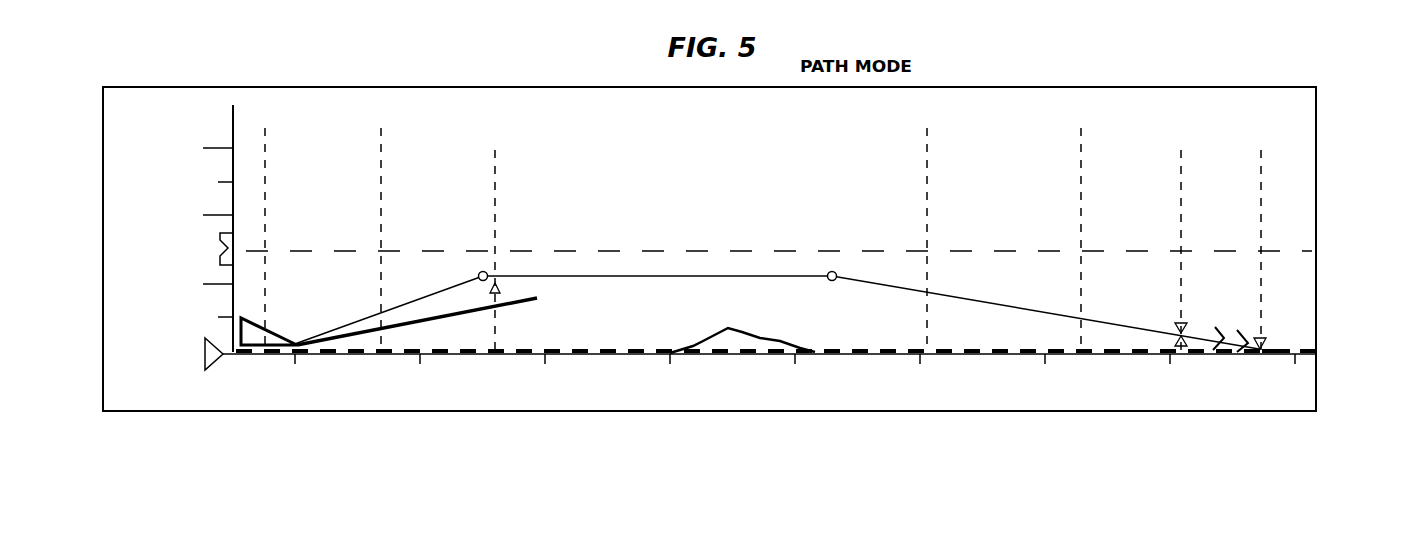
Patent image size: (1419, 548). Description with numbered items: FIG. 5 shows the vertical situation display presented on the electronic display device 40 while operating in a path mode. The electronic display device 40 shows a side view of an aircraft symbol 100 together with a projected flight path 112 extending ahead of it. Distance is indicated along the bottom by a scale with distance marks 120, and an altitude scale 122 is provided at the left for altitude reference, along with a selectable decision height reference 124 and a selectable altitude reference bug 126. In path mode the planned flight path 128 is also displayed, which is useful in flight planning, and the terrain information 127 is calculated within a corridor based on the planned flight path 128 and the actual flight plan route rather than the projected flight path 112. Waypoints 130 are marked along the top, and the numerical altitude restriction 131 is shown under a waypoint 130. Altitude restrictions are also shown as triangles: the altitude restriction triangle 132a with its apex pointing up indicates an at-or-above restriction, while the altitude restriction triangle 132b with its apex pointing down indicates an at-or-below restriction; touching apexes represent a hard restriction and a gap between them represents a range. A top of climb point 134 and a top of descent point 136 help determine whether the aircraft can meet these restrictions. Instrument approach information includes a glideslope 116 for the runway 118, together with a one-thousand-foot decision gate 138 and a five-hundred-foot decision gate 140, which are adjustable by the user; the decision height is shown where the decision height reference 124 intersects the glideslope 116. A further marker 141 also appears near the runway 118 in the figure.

The electronic display device 40 is at (1333, 148).
The aircraft symbol 100 is at (250, 318).
The projected flight path 112 is at (508, 304).
The glideslope 116 is at (1200, 340).
The runway 118 is at (1270, 350).
The distance marks 120 is at (297, 362).
The altitude scale 122 is at (140, 215).
The decision height reference 124 is at (212, 366).
The altitude reference bug 126 is at (218, 262).
The terrain information 127 is at (778, 338).
The planned flight path 128 is at (408, 302).
The waypoint 130 is at (291, 89).
The altitude restriction 131 is at (530, 135).
The altitude restriction triangle 132a is at (503, 288).
The altitude restriction triangle 132b is at (1174, 325).
The top of climb point 134 is at (477, 275).
The top of descent point 136 is at (827, 273).
The 1000 foot decision gate 138 is at (1222, 332).
The 500 foot decision gate 140 is at (1261, 336).
The decision point marker 141 is at (1266, 343).